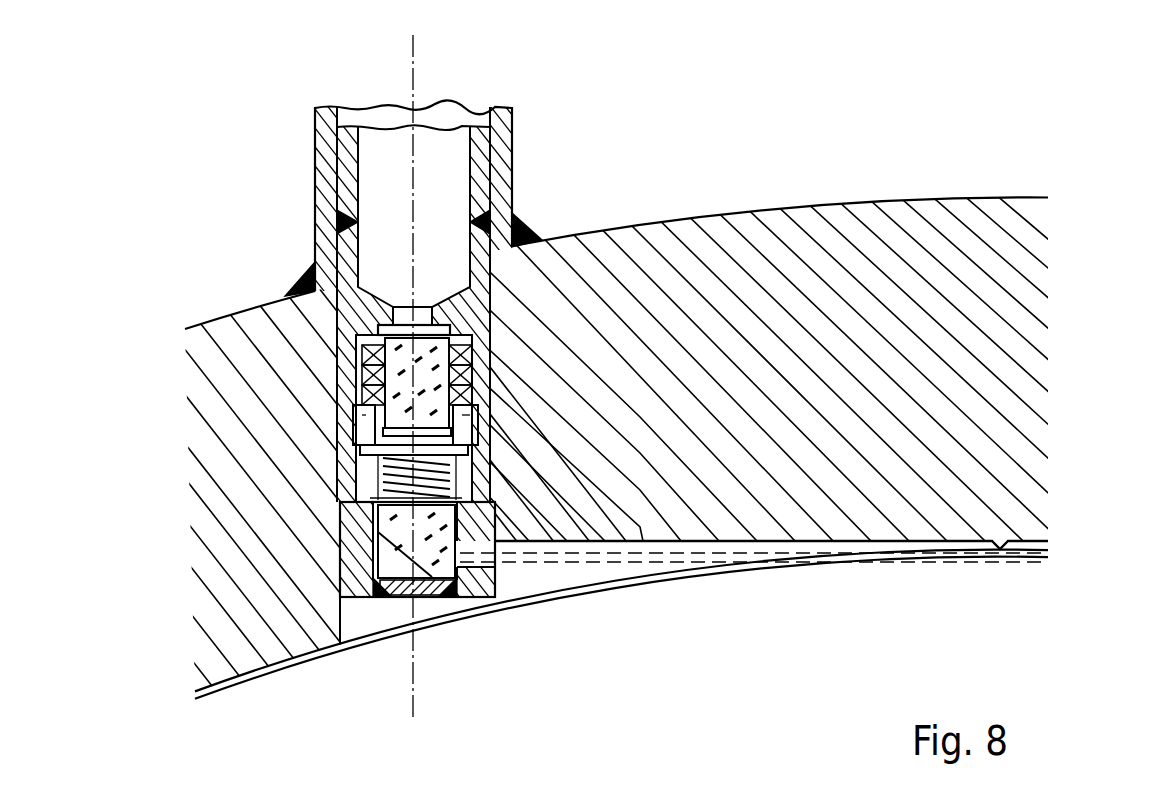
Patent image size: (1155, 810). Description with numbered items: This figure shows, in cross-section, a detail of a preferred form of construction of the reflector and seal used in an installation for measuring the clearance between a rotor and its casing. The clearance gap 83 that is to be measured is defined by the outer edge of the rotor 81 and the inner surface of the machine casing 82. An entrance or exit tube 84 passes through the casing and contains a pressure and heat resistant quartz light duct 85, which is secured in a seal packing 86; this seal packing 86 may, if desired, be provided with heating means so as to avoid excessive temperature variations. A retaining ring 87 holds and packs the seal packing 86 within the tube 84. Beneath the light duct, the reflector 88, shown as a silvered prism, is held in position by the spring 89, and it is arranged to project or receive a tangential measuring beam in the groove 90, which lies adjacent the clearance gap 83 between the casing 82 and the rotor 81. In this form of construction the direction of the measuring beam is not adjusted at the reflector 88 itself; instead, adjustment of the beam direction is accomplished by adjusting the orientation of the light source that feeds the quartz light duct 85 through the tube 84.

The rotor 81 is at (972, 614).
The machine casing 82 is at (980, 484).
The clearance gap 83 is at (1050, 555).
The entrance or exit tube 84 is at (348, 142).
The quartz light duct 85 is at (368, 362).
The seal packing 86 is at (358, 440).
The retaining ring 87 is at (352, 490).
The reflector 88 is at (378, 548).
The spring 89 is at (373, 535).
The groove 90 is at (546, 583).